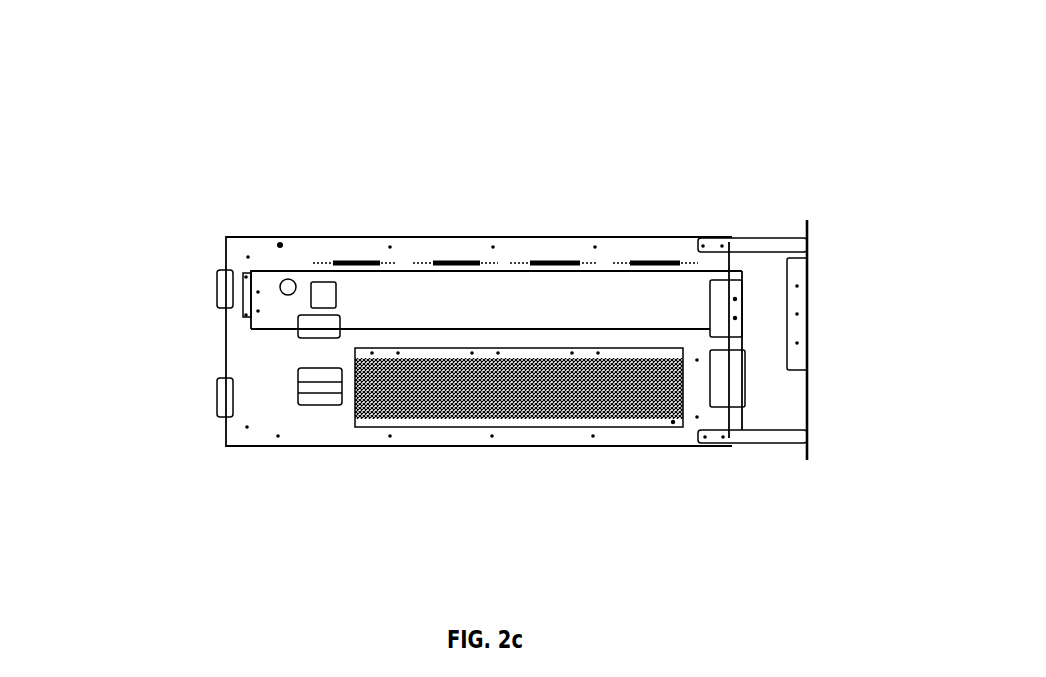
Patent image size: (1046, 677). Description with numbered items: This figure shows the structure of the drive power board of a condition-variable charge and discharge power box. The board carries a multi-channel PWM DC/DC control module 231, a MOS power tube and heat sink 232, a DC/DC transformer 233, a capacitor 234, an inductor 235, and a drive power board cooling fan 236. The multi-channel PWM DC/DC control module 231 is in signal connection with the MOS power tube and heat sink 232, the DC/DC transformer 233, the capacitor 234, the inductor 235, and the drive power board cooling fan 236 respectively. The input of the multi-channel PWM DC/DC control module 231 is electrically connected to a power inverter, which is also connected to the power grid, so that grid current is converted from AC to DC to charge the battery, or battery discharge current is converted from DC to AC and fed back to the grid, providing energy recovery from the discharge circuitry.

The multi-channel PWM DC/DC control module 231 is at (563, 260).
The MOS power tube and heat sink 232 is at (683, 383).
The DC/DC transformer 233 is at (315, 385).
The capacitor 234 is at (288, 279).
The inductor 235 is at (313, 325).
The drive power board cooling fan 236 is at (722, 362).